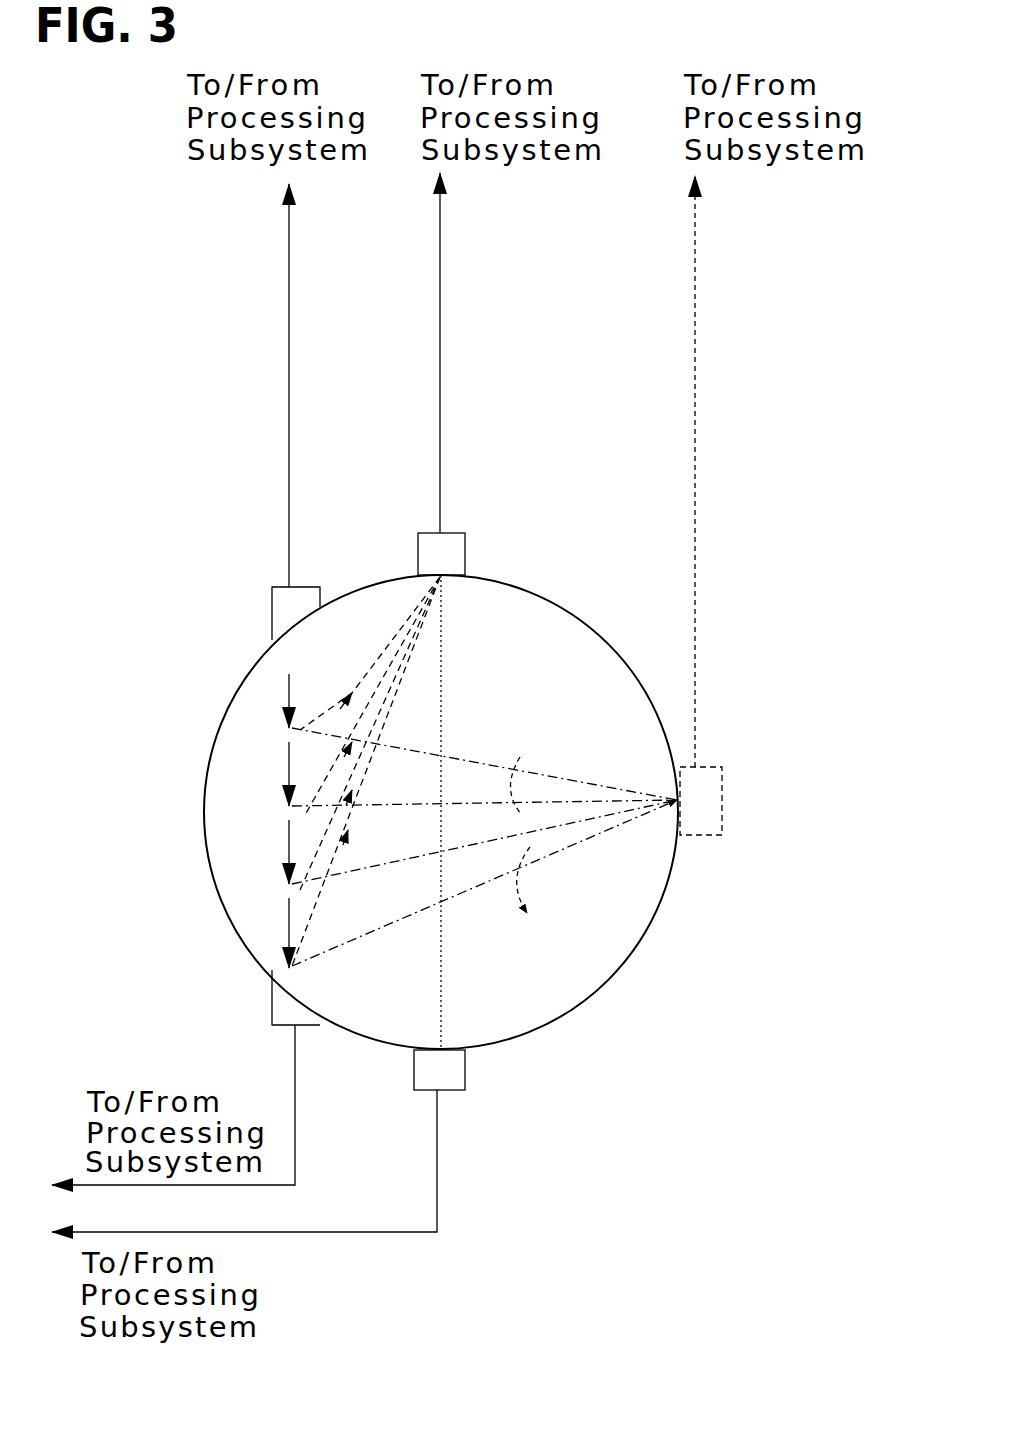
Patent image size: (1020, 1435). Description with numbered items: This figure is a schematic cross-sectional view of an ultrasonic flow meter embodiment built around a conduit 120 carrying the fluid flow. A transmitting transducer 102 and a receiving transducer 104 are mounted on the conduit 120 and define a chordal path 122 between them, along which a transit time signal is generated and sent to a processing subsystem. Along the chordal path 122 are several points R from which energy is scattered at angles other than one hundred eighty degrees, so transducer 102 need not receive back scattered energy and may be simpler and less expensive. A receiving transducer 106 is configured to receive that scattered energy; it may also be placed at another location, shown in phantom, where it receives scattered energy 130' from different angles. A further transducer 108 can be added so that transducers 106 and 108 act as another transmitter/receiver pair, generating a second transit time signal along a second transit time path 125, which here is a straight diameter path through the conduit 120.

The transmitting transducer 102 is at (268, 610).
The receiving transducer 104 is at (280, 1025).
The receiving transducer 106 is at (416, 553).
The transducer 108 is at (455, 1092).
The conduit 120 is at (211, 893).
The chordal path 122 is at (290, 674).
The second transit time path 125 is at (445, 1010).
The scattered energy 130' is at (561, 826).